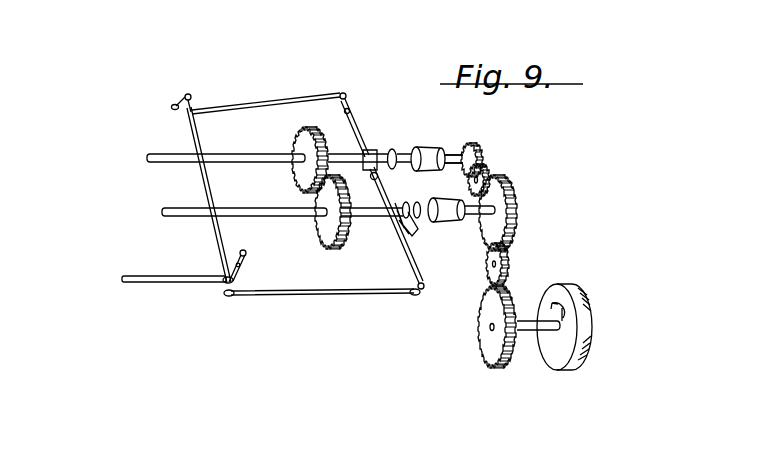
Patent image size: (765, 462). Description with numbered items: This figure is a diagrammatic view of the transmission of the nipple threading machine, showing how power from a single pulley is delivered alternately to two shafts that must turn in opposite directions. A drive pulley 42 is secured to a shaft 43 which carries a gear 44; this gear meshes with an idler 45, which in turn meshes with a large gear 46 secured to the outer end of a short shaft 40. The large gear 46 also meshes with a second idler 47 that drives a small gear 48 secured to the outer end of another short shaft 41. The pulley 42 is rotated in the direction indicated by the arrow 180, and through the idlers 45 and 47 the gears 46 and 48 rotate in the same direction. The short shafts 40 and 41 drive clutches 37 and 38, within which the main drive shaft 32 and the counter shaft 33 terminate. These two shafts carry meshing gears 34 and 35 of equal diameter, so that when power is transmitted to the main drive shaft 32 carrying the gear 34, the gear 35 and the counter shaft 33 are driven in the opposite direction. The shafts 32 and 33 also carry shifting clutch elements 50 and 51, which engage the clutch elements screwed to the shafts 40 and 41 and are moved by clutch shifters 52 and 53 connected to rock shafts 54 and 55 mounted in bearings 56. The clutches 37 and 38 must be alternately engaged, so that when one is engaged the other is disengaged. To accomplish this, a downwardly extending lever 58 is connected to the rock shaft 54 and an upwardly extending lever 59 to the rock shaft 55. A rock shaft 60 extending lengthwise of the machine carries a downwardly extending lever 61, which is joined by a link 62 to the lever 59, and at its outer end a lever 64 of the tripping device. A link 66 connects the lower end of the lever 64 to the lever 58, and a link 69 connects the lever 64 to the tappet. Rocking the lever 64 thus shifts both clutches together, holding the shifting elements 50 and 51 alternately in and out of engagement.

The main drive shaft 32 is at (248, 212).
The counter shaft 33 is at (239, 157).
The gear 34 is at (322, 241).
The gear 35 is at (296, 141).
The clutch 37 is at (443, 205).
The clutch 38 is at (424, 157).
The short shaft 40 is at (453, 222).
The short shaft 41 is at (450, 155).
The drive pulley 42 is at (583, 352).
The shaft 43 is at (534, 332).
The gear 44 is at (490, 356).
The idler 45 is at (512, 263).
The large gear 46 is at (512, 213).
The idler 47 is at (490, 171).
The small gear 48 is at (478, 147).
The shifting clutch element 50 is at (426, 221).
The shifting clutch element 51 is at (392, 149).
The clutch shifter 52 is at (399, 227).
The clutch shifter 53 is at (366, 172).
The rock shaft 54 is at (419, 279).
The rock shaft 55 is at (357, 138).
The bearings 56 is at (381, 178).
The downwardly extending lever 58 is at (421, 291).
The upwardly extending lever 59 is at (348, 98).
The rock shaft 60 is at (230, 248).
The downwardly extending lever 61 is at (177, 106).
The link 62 is at (263, 101).
The lever 64 is at (246, 257).
The link 66 is at (331, 294).
The link 69 is at (199, 288).
The arrow 180 is at (568, 312).